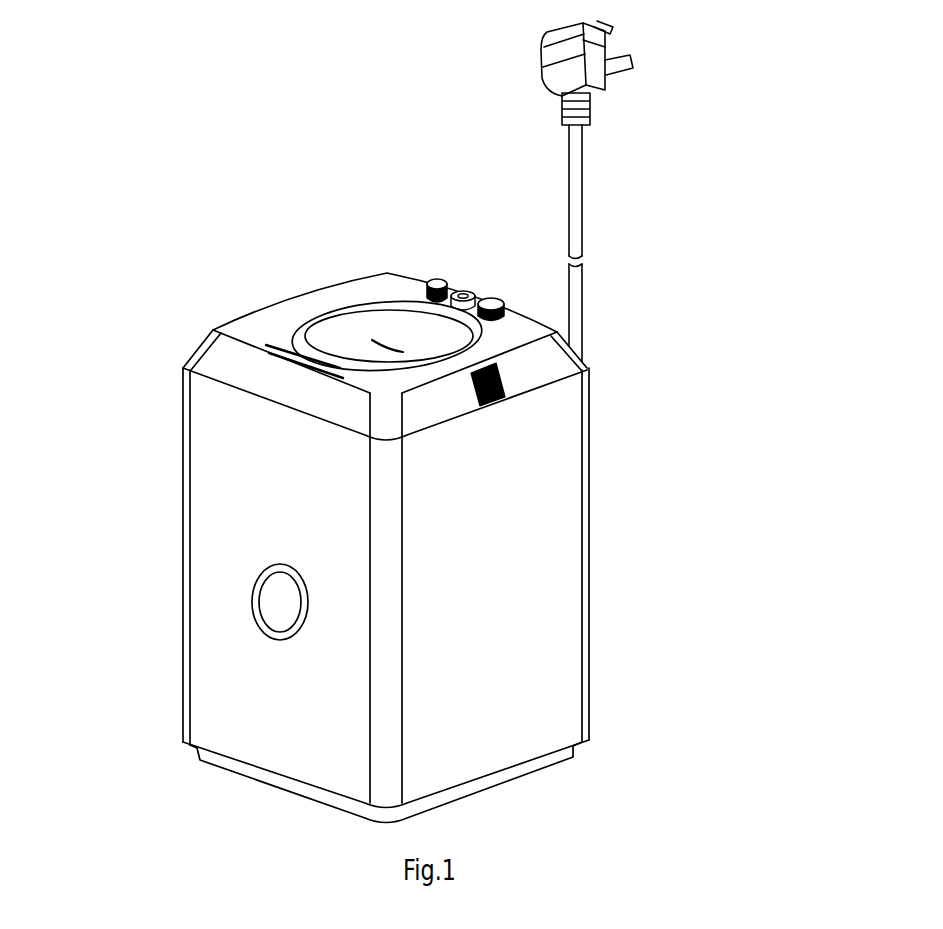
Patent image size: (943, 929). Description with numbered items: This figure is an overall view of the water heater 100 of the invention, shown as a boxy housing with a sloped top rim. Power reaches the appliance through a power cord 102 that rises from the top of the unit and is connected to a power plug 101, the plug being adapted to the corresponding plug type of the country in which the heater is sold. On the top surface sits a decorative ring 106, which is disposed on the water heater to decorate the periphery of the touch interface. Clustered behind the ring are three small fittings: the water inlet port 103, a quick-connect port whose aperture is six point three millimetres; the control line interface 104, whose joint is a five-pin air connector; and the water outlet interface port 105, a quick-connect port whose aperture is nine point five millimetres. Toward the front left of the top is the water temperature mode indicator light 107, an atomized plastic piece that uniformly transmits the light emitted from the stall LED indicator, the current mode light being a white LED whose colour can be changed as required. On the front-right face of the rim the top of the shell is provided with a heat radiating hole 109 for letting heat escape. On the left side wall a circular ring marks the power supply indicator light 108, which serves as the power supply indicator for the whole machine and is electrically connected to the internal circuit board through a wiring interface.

The water heater 100 is at (556, 566).
The power plug 101 is at (632, 81).
The power cord 102 is at (590, 279).
The water inlet port 103 is at (434, 274).
The control line interface 104 is at (465, 289).
The water outlet interface port 105 is at (494, 294).
The decorative ring 106 is at (315, 317).
The water temperature mode indicator light 107 is at (266, 344).
The power supply indicator light 108 is at (252, 603).
The heat radiating hole 109 is at (508, 380).